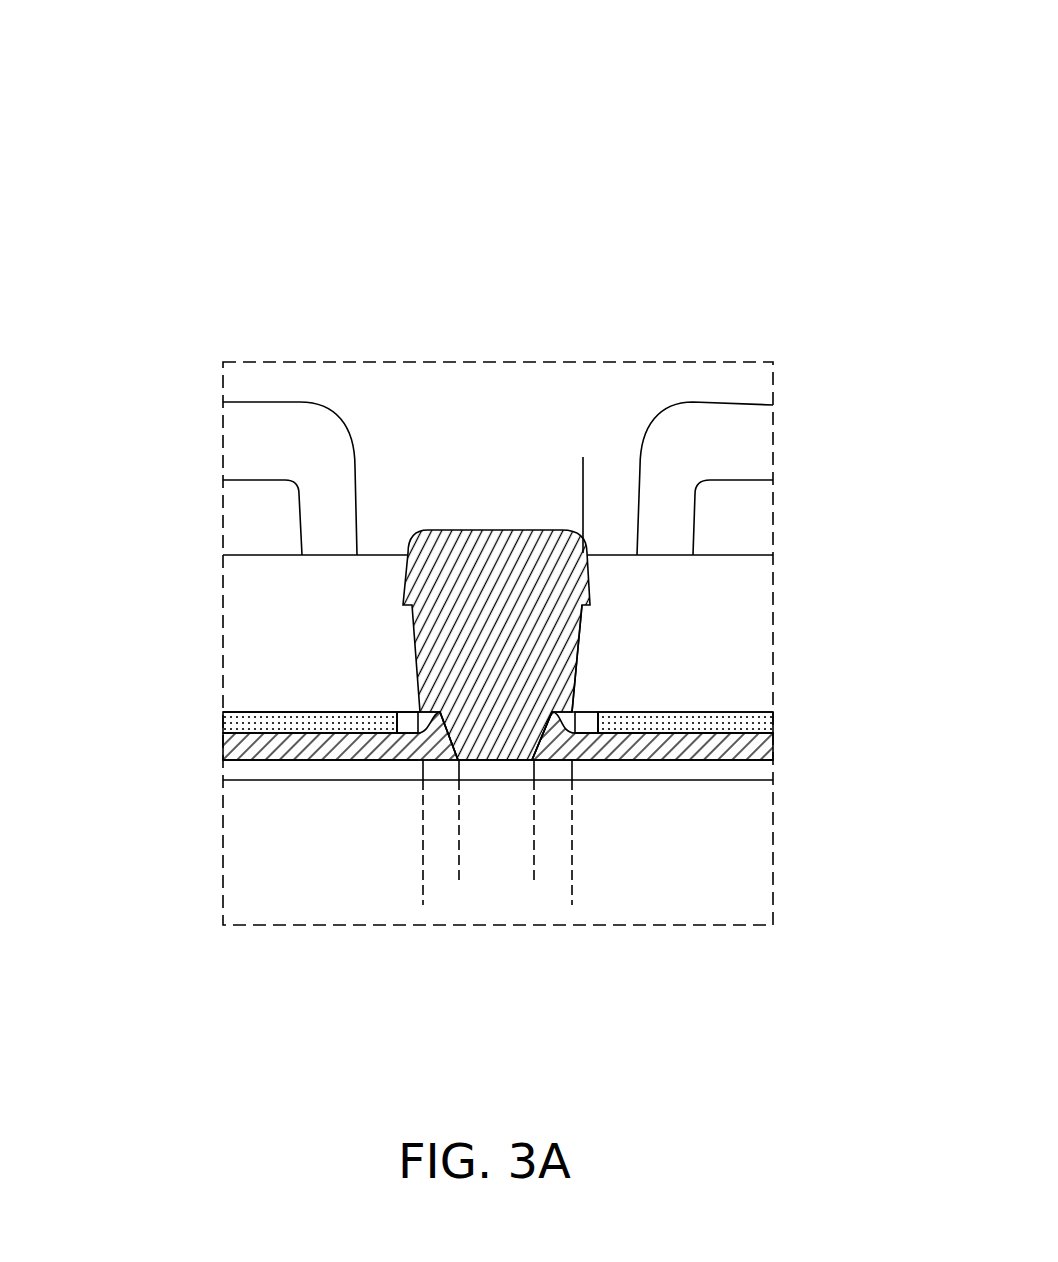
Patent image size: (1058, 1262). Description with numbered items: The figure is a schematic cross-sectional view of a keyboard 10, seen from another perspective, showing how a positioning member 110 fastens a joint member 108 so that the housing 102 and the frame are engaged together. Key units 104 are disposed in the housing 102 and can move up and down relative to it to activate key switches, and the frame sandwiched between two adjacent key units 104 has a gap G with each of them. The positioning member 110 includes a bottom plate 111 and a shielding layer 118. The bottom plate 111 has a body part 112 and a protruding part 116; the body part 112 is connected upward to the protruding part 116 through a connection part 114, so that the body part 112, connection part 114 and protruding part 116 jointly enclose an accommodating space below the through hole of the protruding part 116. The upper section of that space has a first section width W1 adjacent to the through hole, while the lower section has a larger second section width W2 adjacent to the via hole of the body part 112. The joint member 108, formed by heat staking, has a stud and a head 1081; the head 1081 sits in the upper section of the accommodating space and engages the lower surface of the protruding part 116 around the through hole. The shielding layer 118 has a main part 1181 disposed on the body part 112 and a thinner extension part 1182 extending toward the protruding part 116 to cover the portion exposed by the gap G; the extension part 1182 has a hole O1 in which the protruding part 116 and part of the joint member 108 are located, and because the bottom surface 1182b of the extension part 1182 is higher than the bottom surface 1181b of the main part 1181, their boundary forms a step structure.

The keyboard 10 is at (496, 344).
The housing 102 is at (768, 772).
The key units 104 is at (233, 441).
The joint member 108 is at (475, 718).
The head 1081 is at (494, 762).
The positioning member 110 is at (88, 33).
The bottom plate 111 is at (146, 10).
The body part 112 is at (713, 752).
The connection part 114 is at (583, 752).
The protruding part 116 is at (577, 643).
The shielding layer 118 is at (856, 655).
The main part 1181 is at (768, 717).
The bottom surface of the main part 1181b is at (302, 746).
The extension part 1182 is at (590, 712).
The bottom surface of the extension part 1182b is at (405, 699).
The hole O1 is at (563, 700).
The gap G is at (583, 475).
The first section width W1 is at (459, 876).
The second section width W2 is at (423, 900).